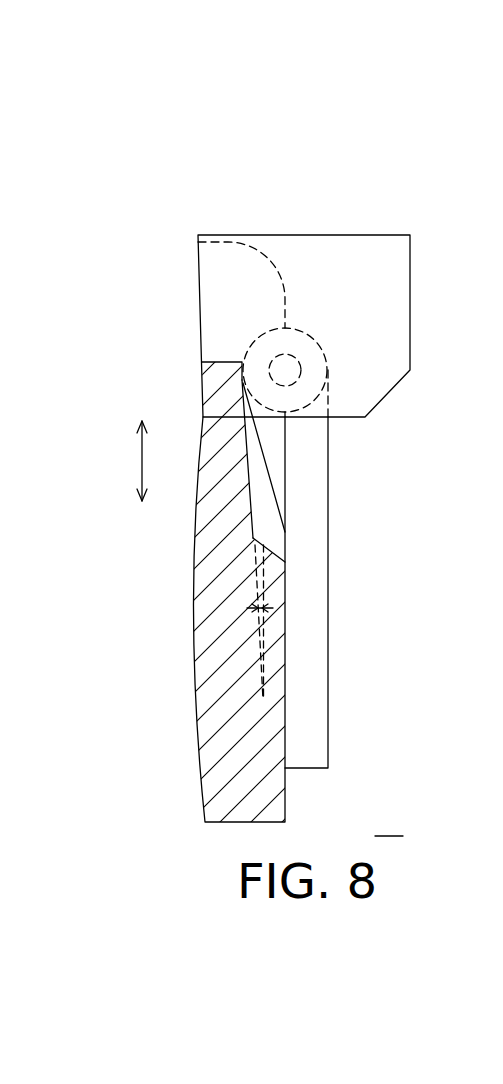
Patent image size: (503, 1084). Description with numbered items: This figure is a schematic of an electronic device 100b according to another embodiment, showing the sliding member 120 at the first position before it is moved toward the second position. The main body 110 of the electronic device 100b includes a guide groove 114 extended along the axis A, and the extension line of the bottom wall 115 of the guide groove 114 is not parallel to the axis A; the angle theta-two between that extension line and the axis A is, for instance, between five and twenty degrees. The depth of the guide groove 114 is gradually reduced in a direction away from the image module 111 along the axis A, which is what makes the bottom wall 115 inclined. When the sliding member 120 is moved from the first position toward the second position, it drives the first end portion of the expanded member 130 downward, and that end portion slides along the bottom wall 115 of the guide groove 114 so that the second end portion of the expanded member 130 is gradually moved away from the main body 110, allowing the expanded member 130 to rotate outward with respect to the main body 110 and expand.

The electronic device 100b is at (158, 175).
The main body 110 is at (232, 765).
The image module 111 is at (224, 257).
The guide groove 114 is at (258, 510).
The bottom wall 115 is at (247, 455).
The sliding member 120 is at (325, 250).
The expanded member 130 is at (312, 582).